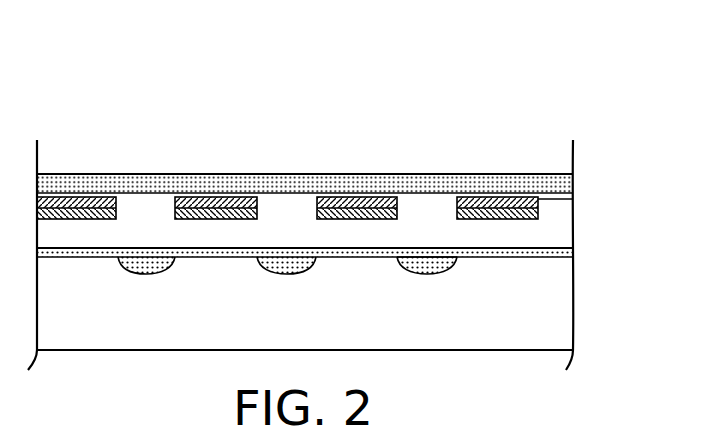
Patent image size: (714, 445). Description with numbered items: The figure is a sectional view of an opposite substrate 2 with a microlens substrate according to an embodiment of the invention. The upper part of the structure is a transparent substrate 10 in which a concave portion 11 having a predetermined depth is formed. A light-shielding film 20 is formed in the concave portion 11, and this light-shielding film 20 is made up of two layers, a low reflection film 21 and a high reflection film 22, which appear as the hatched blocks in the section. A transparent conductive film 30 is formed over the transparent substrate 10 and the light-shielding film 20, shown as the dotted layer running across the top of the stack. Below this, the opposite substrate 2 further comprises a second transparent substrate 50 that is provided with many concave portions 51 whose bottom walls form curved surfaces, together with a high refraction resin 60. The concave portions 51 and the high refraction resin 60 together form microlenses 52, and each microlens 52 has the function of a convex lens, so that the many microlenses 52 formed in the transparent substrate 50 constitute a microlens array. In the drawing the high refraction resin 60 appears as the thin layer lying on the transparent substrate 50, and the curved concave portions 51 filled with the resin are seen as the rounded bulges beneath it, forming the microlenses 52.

The opposite substrate 2 is at (331, 110).
The transparent substrate 10 is at (553, 237).
The concave portion 11 is at (493, 219).
The light-shielding film 20 is at (573, 199).
The low reflection film 21 is at (448, 198).
The high reflection film 22 is at (455, 211).
The transparent conductive film 30 is at (107, 186).
The transparent substrate 50 is at (540, 326).
The concave portions 51 is at (430, 274).
The microlenses 52 is at (408, 258).
The high refraction resin 60 is at (566, 254).